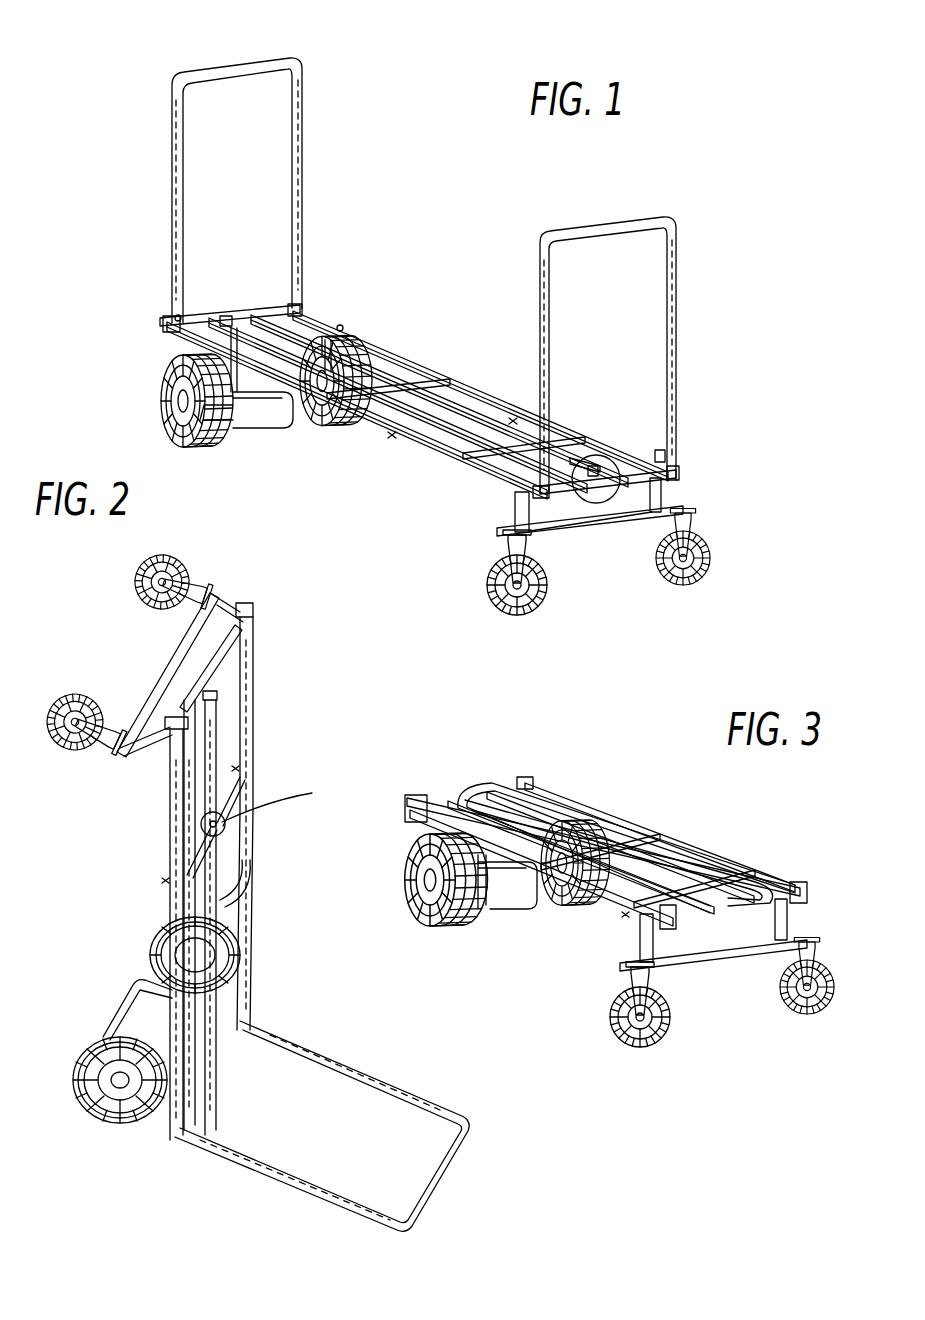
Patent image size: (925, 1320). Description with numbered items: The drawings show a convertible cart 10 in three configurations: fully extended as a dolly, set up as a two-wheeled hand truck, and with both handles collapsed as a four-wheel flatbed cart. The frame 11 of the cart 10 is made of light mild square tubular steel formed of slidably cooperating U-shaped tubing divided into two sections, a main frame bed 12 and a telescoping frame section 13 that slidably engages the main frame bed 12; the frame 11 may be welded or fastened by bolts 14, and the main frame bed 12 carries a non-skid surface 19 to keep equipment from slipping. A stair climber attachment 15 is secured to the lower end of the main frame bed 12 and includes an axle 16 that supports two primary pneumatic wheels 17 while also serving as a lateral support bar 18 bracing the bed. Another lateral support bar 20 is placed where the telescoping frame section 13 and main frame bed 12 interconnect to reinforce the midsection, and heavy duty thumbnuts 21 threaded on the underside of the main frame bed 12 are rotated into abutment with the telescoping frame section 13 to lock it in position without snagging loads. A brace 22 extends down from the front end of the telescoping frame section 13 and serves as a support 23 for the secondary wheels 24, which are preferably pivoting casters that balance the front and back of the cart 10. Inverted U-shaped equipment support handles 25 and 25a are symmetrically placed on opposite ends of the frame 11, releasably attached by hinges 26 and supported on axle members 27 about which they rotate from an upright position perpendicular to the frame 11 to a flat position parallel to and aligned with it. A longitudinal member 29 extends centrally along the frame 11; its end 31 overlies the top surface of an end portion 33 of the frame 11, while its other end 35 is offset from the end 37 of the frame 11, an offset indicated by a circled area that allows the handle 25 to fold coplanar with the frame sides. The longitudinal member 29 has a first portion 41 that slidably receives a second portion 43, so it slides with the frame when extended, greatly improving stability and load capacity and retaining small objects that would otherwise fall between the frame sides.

In FIG. 1, the cart 10 is at (340, 215).
In FIG. 2, the cart 10 is at (275, 690).
In FIG. 3, the cart 10 is at (505, 765).
In FIG. 1, the frame 11 is at (418, 375).
In FIG. 2, the frame 11 is at (208, 910).
In FIG. 3, the frame 11 is at (680, 835).
In FIG. 1, the main frame bed 12 is at (385, 325).
In FIG. 1, the telescoping frame section 13 is at (490, 462).
In FIG. 1, the bolts 14 is at (320, 320).
In FIG. 2, the bolts 14 is at (260, 1018).
In FIG. 3, the bolts 14 is at (540, 783).
In FIG. 1, the stair climber attachment 15 is at (245, 425).
In FIG. 2, the stair climber attachment 15 is at (240, 870).
In FIG. 3, the stair climber attachment 15 is at (530, 900).
In FIG. 1, the axle 16 is at (270, 395).
In FIG. 3, the axle 16 is at (505, 880).
In FIG. 1, the primary pneumatic wheels 17 is at (165, 393).
In FIG. 2, the primary pneumatic wheels 17 is at (240, 950).
In FIG. 3, the primary pneumatic wheels 17 is at (420, 920).
In FIG. 1, the lateral support bar 18 is at (390, 350).
In FIG. 1, the non-skid surface 19 is at (340, 325).
In FIG. 2, the non-skid surface 19 is at (205, 825).
In FIG. 1, the lateral support bar 20 is at (455, 420).
In FIG. 1, the thumbnuts 21 is at (510, 420).
In FIG. 2, the thumbnuts 21 is at (238, 770).
In FIG. 3, the thumbnuts 21 is at (625, 915).
In FIG. 1, the brace 22 is at (510, 500).
In FIG. 2, the brace 22 is at (181, 674).
In FIG. 3, the brace 22 is at (640, 935).
In FIG. 1, the support 23 is at (600, 520).
In FIG. 2, the support 23 is at (179, 675).
In FIG. 3, the support 23 is at (700, 955).
In FIG. 1, the secondary wheels 24 is at (495, 590).
In FIG. 2, the secondary wheels 24 is at (130, 575).
In FIG. 3, the secondary wheels 24 is at (620, 1030).
In FIG. 1, the equipment support handle 25 is at (178, 195).
In FIG. 2, the equipment support handle 25 is at (360, 1085).
In FIG. 3, the equipment support handle 25 is at (760, 880).
In FIG. 1, the equipment support handle 25a is at (675, 330).
In FIG. 2, the equipment support handle 25a is at (252, 735).
In FIG. 3, the equipment support handle 25a is at (570, 793).
In FIG. 1, the hinges 26 is at (165, 325).
In FIG. 2, the axle members 27 is at (185, 700).
In FIG. 3, the axle members 27 is at (430, 797).
In FIG. 1, the longitudinal member 29 is at (585, 458).
In FIG. 2, the longitudinal member 29 is at (220, 840).
In FIG. 1, the end 31 is at (285, 310).
In FIG. 1, the end portion 33 is at (225, 325).
In FIG. 1, the end 35 is at (600, 470).
In FIG. 1, the end 37 is at (660, 455).
In FIG. 1, the first portion 41 is at (415, 385).
In FIG. 1, the second portion 43 is at (565, 445).